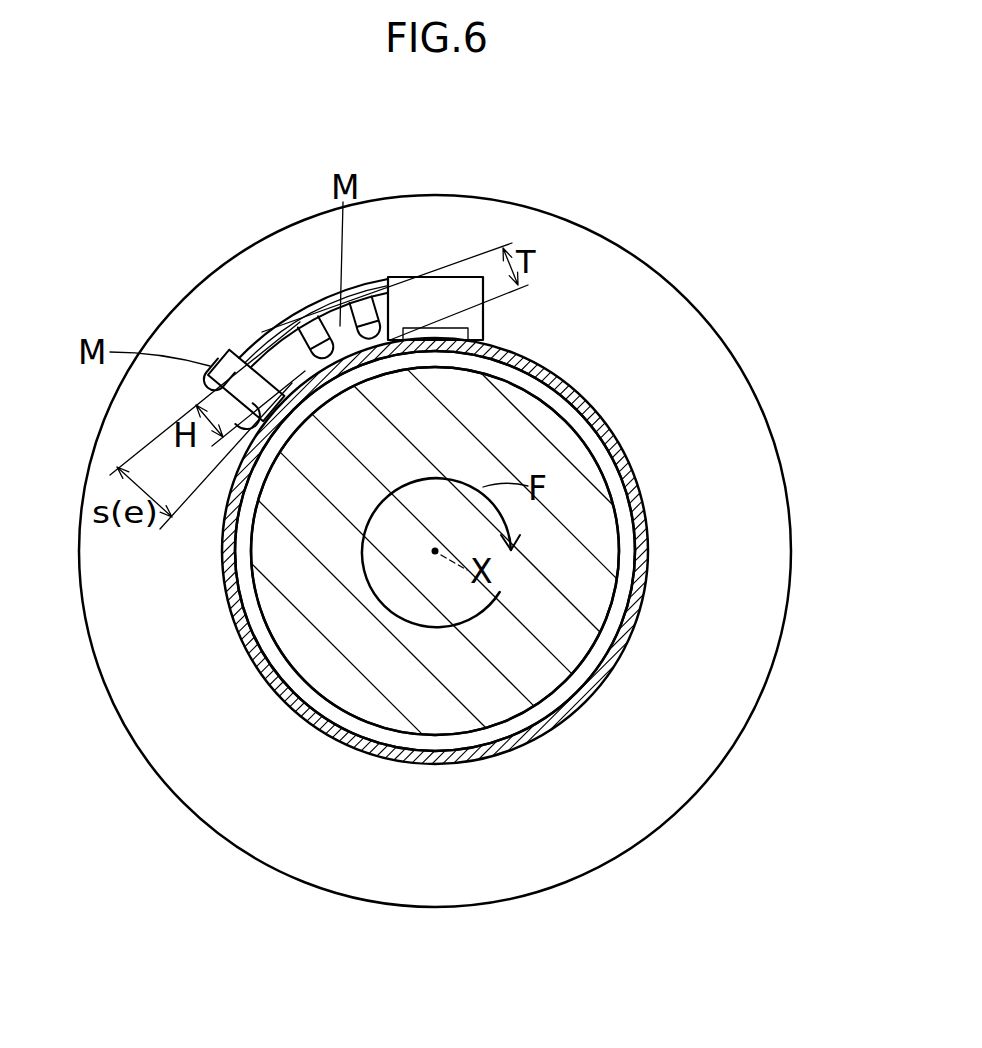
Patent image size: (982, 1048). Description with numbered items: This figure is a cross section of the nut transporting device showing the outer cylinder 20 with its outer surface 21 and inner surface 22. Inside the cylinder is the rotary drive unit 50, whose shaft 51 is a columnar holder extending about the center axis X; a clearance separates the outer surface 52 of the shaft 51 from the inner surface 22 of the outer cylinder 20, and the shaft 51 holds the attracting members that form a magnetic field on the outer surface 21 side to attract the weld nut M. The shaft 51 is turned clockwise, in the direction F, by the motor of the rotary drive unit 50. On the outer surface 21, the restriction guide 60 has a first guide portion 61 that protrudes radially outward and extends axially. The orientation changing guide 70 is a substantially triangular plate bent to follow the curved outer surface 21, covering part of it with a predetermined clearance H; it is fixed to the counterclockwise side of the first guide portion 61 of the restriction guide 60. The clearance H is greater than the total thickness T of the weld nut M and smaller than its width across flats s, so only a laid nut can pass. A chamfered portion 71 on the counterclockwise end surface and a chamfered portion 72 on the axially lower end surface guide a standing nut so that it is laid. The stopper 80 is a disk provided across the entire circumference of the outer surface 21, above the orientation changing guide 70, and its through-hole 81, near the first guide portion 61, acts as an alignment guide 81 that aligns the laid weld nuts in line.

The stopper 80 is at (636, 283).
The outer cylinder 20 is at (579, 400).
The outer surface 21 is at (634, 462).
The inner surface 22 is at (607, 640).
The rotary drive unit 50 is at (435, 605).
The shaft 51 is at (484, 712).
The outer surface of the shaft 52 is at (395, 737).
The restriction guide 60 is at (516, 316).
The first guide portion 61 is at (473, 320).
The orientation changing guide 70 is at (250, 288).
The chamfered portion 71 is at (213, 358).
The chamfered portion 72 is at (236, 338).
The through-hole (alignment guide) 81 is at (297, 332).